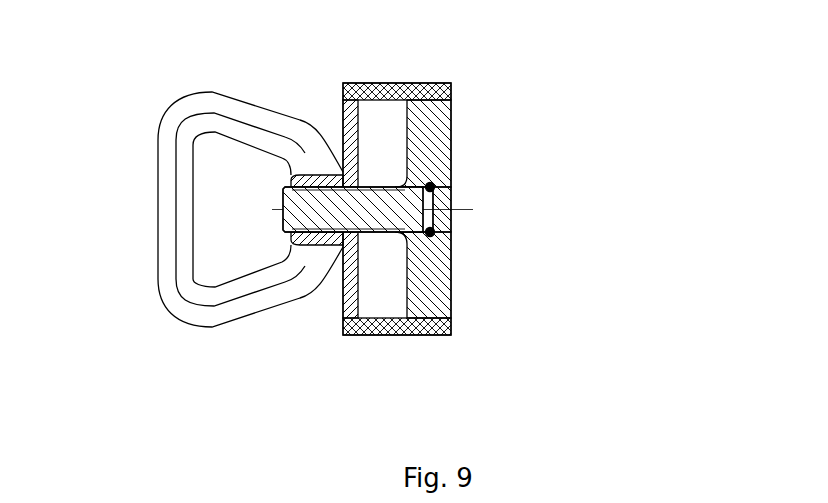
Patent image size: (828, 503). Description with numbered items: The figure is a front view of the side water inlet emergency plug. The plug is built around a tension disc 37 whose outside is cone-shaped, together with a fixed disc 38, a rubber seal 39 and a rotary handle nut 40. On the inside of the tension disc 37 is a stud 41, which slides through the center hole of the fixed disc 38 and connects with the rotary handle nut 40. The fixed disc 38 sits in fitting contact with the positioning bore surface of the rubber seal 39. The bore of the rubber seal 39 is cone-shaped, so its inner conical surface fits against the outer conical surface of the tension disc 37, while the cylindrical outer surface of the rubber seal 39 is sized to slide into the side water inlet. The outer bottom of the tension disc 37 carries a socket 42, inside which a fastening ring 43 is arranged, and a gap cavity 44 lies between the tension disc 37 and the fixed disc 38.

The tension disc 37 is at (433, 131).
The fixed disc 38 is at (360, 156).
The rubber seal 39 is at (443, 333).
The rotary handle nut 40 is at (195, 115).
The stud 41 is at (282, 203).
The socket 42 is at (282, 222).
The fastening ring 43 is at (302, 252).
The gap cavity 44 is at (380, 290).